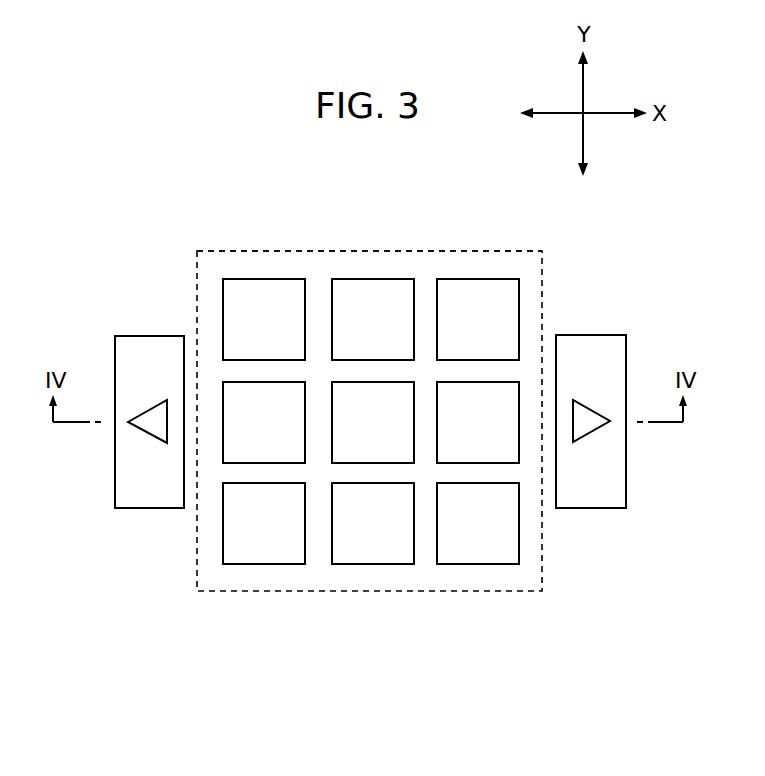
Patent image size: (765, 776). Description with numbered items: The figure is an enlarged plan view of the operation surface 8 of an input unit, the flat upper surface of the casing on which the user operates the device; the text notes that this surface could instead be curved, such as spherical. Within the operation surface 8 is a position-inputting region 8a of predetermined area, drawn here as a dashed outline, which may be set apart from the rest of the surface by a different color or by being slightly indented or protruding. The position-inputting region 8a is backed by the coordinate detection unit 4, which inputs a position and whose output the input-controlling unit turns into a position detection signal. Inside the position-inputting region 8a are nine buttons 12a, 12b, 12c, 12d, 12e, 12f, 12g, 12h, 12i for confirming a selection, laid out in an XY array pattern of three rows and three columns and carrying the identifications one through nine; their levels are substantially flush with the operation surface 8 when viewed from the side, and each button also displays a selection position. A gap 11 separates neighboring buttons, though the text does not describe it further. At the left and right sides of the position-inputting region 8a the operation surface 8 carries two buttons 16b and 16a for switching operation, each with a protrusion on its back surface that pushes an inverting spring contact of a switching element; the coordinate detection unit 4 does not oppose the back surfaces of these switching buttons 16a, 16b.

The coordinate detection unit 4 is at (300, 251).
The operation surface 8 is at (572, 246).
The position-inputting region 8a is at (497, 252).
The gap between keys 11 is at (404, 588).
The button 12a is at (240, 292).
The button 12b is at (352, 292).
The button 12c is at (455, 292).
The button 12d is at (237, 452).
The button 12e is at (332, 440).
The button 12f is at (503, 452).
The button 12g is at (245, 557).
The button 12h is at (360, 558).
The button 12i is at (506, 557).
The button for switching operation 16a is at (617, 500).
The button for switching operation 16b is at (122, 502).